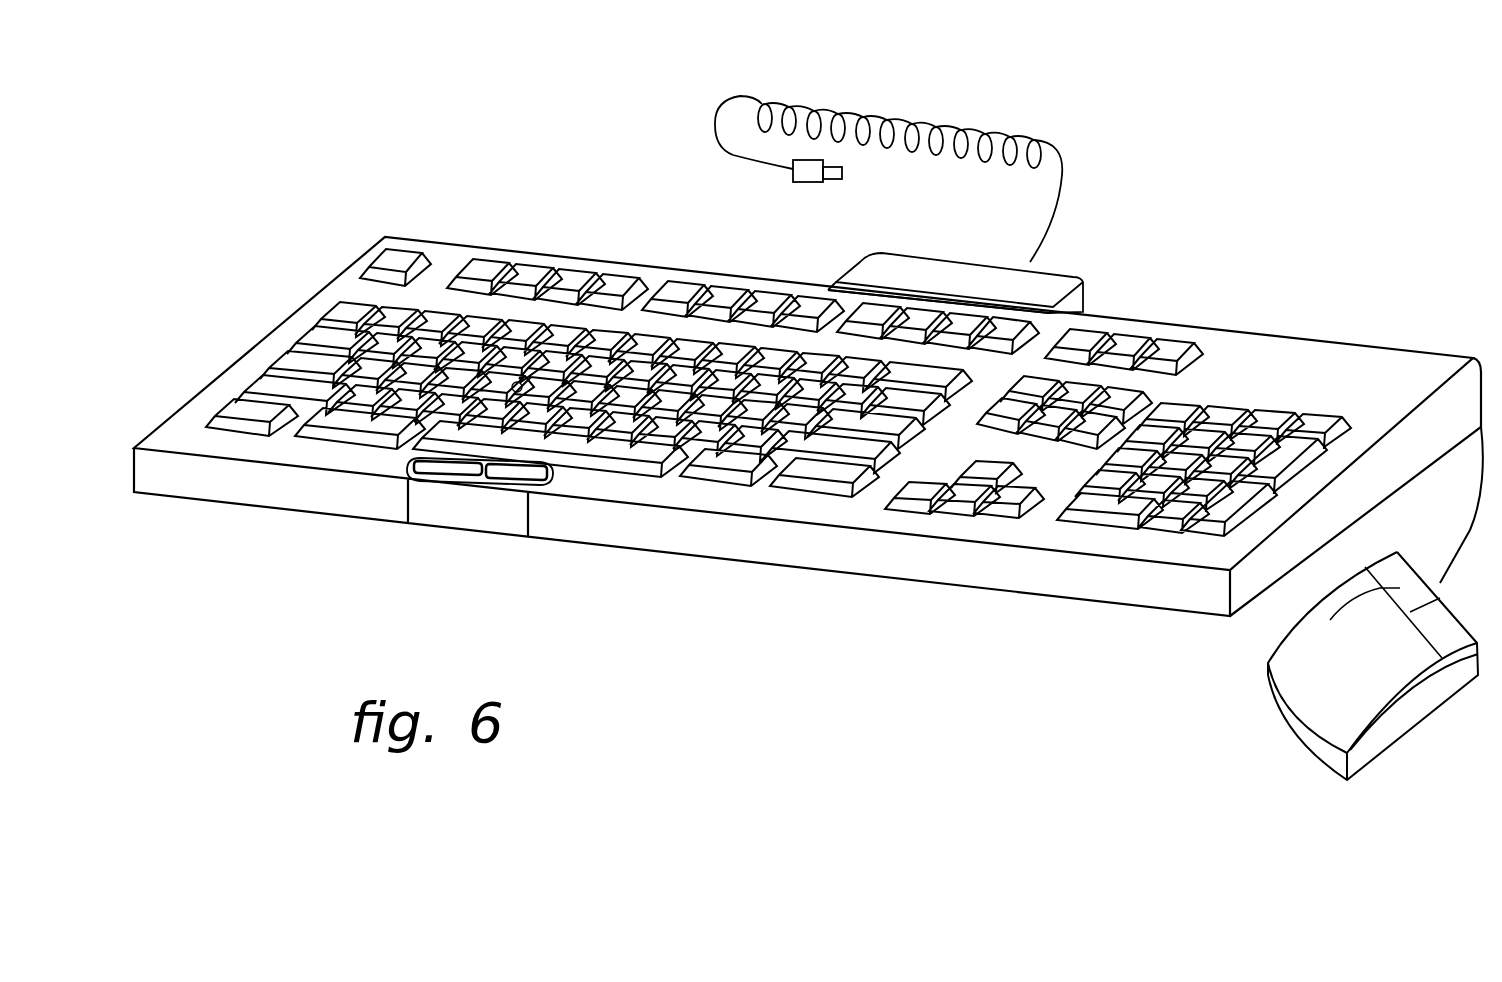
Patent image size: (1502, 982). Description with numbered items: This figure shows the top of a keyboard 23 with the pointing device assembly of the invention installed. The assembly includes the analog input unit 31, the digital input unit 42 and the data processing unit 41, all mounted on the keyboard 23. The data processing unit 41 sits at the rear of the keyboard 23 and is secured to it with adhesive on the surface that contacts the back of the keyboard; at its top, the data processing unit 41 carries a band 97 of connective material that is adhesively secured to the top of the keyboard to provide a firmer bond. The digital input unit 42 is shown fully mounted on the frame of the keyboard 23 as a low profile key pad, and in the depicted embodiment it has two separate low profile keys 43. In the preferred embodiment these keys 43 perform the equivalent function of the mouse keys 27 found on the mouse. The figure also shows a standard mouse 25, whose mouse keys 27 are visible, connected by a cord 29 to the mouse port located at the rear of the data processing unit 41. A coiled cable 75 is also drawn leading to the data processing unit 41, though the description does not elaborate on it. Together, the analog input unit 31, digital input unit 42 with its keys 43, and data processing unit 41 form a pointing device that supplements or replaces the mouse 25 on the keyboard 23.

The keyboard 23 is at (383, 250).
The mouse 25 is at (1294, 603).
The mouse keys 27 is at (1447, 625).
The cord 29 is at (1478, 518).
The analog input unit 31 is at (537, 392).
The data processing unit 41 is at (987, 273).
The digital input unit 42 is at (467, 483).
The low profile keys 43 is at (420, 455).
The coiled cable 75 is at (1025, 143).
The band 97 is at (853, 287).